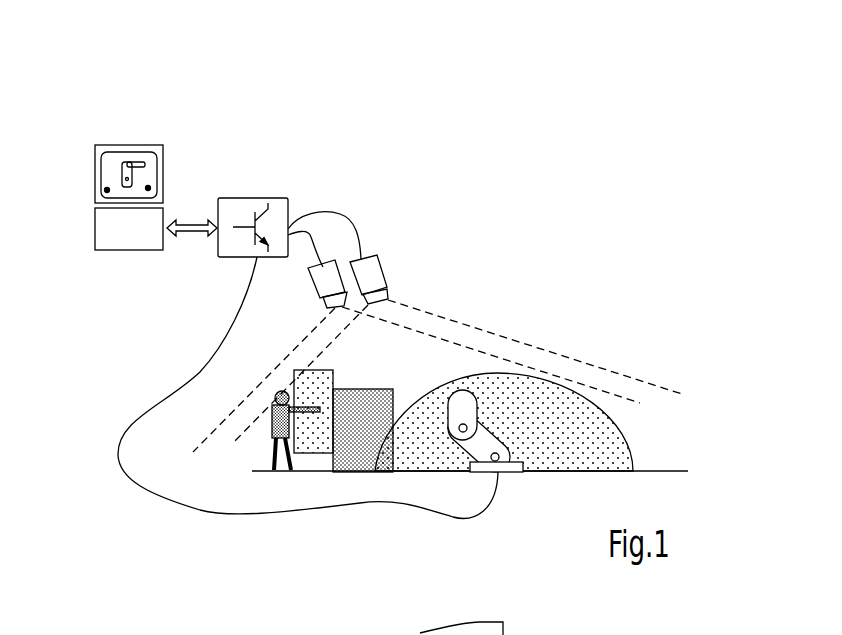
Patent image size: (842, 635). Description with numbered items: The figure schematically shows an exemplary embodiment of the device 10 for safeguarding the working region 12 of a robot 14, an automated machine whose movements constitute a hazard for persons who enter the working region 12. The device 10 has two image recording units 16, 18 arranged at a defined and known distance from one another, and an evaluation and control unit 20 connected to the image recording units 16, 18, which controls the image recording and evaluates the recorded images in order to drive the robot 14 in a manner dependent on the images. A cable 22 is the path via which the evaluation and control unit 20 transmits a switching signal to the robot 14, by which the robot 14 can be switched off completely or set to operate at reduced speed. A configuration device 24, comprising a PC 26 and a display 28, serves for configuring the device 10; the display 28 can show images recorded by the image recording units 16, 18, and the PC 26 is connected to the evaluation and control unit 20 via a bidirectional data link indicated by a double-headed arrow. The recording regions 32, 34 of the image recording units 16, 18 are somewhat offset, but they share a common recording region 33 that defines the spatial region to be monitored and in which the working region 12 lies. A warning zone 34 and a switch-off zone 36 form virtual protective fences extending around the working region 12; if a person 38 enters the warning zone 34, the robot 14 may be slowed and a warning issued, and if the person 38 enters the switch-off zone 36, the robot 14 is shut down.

The device 10 is at (558, 197).
The working region 12 is at (627, 433).
The robot 14 is at (510, 468).
The image recording unit 16 is at (309, 281).
The image recording unit 18 is at (380, 270).
The evaluation and control unit 20 is at (245, 197).
The cable 22 is at (128, 420).
The configuration device 24 is at (88, 163).
The PC 26 is at (118, 250).
The display 28 is at (140, 145).
The recording region 32 is at (413, 330).
The common recording region 33 is at (437, 363).
The warning zone 34 is at (548, 355).
The switch-off zone 36 is at (353, 400).
The person 38 is at (272, 432).